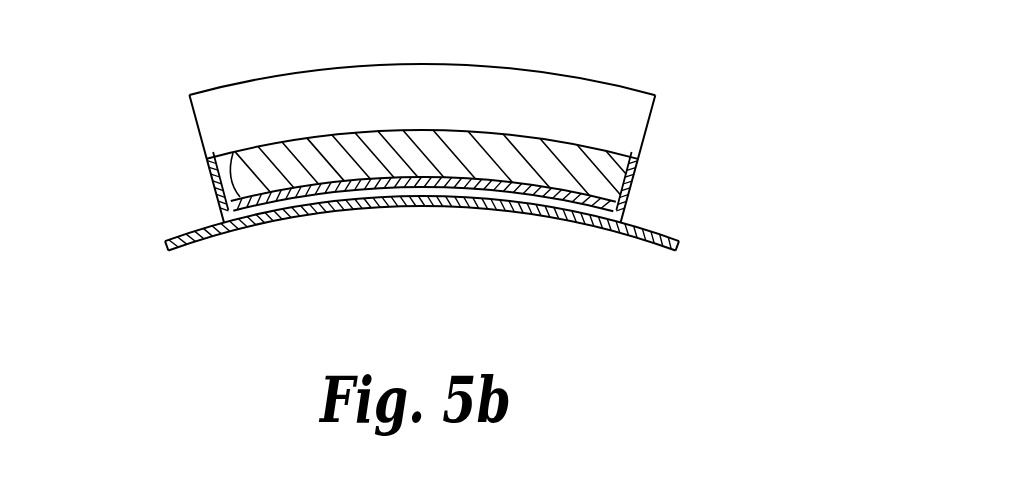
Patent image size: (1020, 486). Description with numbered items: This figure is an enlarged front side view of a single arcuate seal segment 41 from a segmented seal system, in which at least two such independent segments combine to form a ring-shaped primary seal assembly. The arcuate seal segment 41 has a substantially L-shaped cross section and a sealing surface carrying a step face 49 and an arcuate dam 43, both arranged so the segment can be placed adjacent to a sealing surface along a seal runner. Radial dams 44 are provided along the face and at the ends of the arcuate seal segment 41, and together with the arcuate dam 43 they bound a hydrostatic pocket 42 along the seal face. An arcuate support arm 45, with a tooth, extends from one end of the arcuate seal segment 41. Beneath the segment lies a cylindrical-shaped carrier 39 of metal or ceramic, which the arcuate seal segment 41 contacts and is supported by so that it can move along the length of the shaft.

The carrier 39 is at (163, 248).
The arcuate seal segment 41 is at (650, 127).
The hydrostatic pocket 42 is at (505, 140).
The arcuate dam 43 is at (292, 163).
The radial dam 44 is at (209, 186).
The arcuate support arm 45 is at (212, 112).
The step face 49 is at (543, 163).